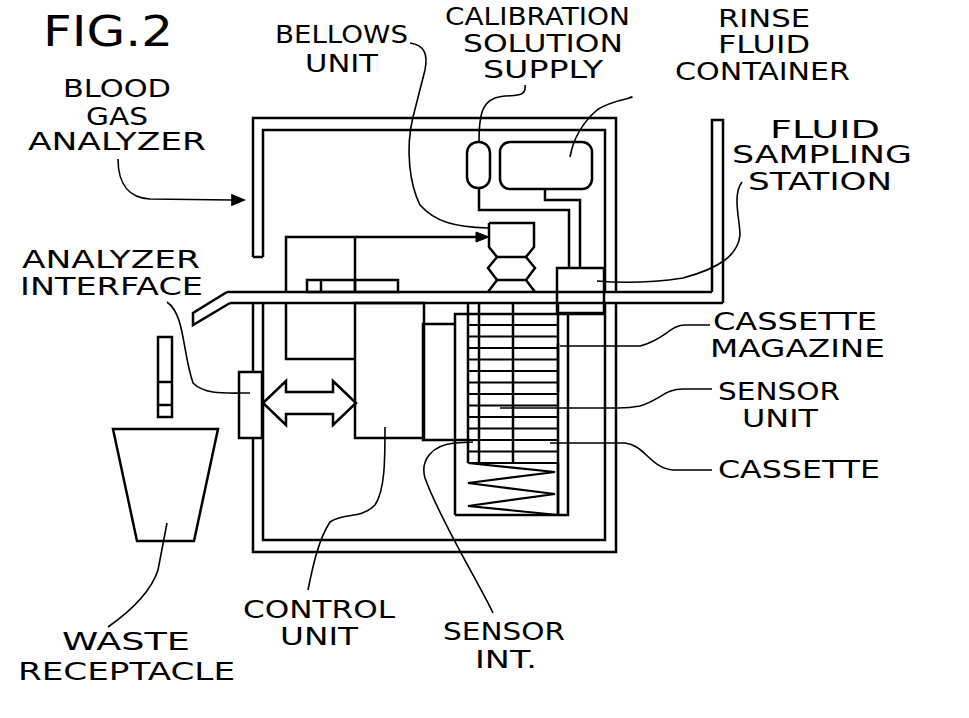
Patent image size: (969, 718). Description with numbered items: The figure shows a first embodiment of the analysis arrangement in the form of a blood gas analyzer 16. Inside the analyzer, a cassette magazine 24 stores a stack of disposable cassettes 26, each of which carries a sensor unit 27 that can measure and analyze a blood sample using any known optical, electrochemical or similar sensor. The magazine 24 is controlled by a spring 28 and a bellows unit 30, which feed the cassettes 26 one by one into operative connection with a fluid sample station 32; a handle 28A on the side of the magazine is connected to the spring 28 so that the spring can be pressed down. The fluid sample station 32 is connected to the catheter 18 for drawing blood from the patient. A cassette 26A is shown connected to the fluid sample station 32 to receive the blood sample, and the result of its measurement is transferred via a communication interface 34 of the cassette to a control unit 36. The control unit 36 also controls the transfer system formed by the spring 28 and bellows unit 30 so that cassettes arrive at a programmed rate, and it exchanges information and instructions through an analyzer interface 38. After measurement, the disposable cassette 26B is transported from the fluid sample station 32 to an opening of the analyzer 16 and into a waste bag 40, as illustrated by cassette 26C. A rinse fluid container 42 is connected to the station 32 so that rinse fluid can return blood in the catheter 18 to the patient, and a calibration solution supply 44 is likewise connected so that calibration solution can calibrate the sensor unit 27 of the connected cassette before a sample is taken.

The blood gas analyzer 16 is at (271, 100).
The catheter 18 is at (712, 167).
The calibration solution supply 44 is at (470, 163).
The rinse fluid container 42 is at (546, 205).
The fluid sample station 32 is at (580, 290).
The bellows unit 30 is at (488, 225).
The disposable cassette 26B is at (373, 280).
The cassette 26A is at (435, 237).
The communication interface 34 is at (470, 292).
The control unit 36 is at (389, 370).
The analyzer interface 38 is at (238, 432).
The cassette 26C is at (158, 337).
The waste bag 40 is at (165, 485).
The cassette magazine 24 is at (560, 418).
The sensor unit 27 is at (513, 320).
The disposable cassettes 26 is at (558, 343).
The handle 28A is at (568, 461).
The spring 28 is at (560, 497).